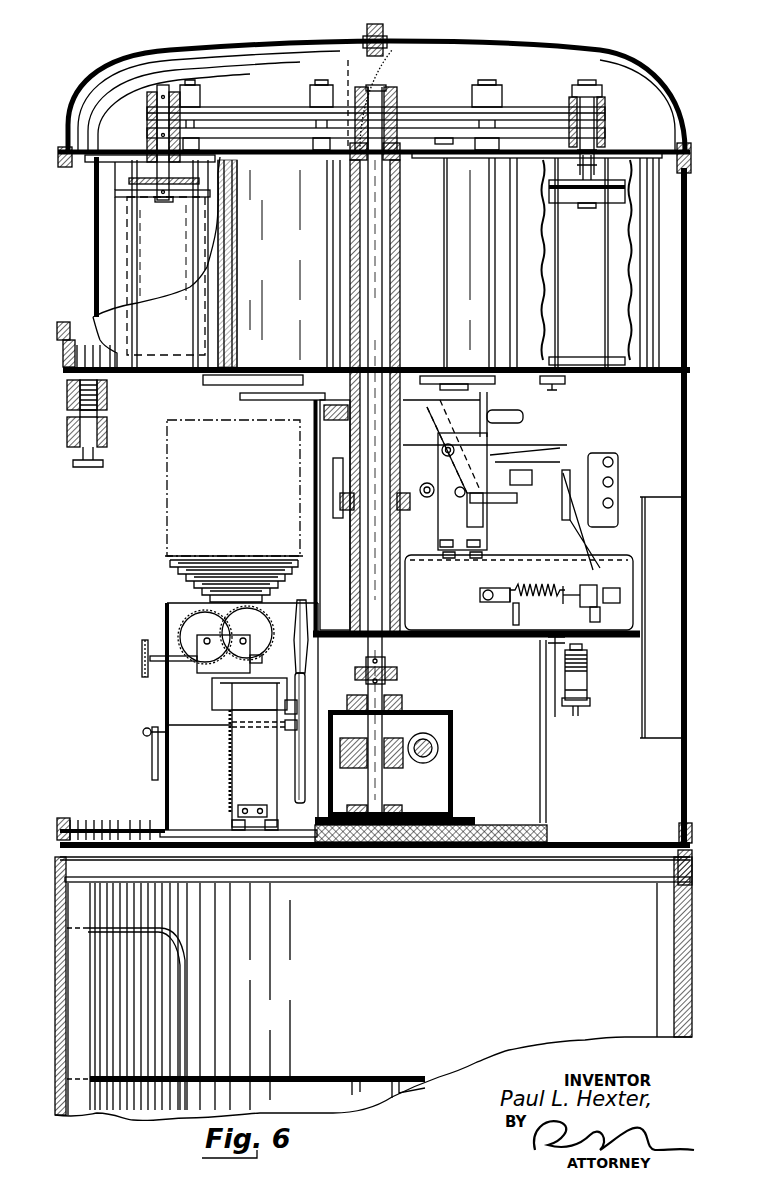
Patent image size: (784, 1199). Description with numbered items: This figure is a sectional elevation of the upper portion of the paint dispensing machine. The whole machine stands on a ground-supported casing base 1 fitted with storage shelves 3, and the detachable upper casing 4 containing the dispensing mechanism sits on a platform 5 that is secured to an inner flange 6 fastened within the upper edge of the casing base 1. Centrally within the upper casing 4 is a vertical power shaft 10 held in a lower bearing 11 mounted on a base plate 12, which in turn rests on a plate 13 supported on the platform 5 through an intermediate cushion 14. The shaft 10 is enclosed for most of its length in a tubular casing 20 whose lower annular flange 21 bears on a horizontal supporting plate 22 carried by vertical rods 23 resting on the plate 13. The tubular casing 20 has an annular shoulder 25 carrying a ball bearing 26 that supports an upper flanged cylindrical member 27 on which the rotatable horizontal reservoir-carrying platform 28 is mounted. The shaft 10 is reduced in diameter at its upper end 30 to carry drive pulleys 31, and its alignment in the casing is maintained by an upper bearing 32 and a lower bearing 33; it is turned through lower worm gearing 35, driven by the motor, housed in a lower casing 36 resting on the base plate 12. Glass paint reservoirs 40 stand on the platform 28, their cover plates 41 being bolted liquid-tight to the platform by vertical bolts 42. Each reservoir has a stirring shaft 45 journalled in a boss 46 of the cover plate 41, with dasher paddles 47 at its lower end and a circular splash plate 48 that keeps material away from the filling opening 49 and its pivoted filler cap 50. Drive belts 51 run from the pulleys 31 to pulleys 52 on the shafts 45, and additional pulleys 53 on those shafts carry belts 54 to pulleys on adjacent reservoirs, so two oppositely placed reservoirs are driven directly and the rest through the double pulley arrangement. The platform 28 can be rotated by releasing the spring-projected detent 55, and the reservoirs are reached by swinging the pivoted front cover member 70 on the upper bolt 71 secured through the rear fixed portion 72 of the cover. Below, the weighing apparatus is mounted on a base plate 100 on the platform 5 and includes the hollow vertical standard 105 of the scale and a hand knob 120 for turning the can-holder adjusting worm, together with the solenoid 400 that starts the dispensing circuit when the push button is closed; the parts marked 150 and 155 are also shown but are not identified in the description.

The casing base 1 is at (692, 947).
The storage shelves 3 is at (340, 1067).
The upper casing 4 is at (686, 440).
The platform 5 is at (622, 843).
The inner flange 6 is at (687, 860).
The vertical power shaft 10 is at (392, 277).
The lower bearing 11 is at (398, 813).
The base plate 12 is at (487, 806).
The plate 13 is at (557, 822).
The intermediate cushion 14 is at (556, 839).
The tubular casing 20 is at (400, 243).
The annular flange 21 is at (362, 588).
The horizontal supporting plate 22 is at (520, 638).
The vertical rods 23 is at (543, 780).
The annular shoulder 25 is at (402, 512).
The ball bearing 26 is at (401, 492).
The upper flanged cylindrical member 27 is at (432, 372).
The reservoir carrying platform 28 is at (682, 374).
The reduced upper end of shaft 30 is at (378, 86).
The drive pulleys 31 is at (394, 108).
The upper bearing 32 is at (392, 640).
The lower bearing 33 is at (393, 147).
The worm gearing 35 is at (398, 762).
The lower casing 36 is at (455, 739).
The paint reservoirs 40 is at (652, 287).
The cover plates 41 is at (693, 160).
The vertical bolts 42 is at (260, 252).
The stirring shafts 45 is at (163, 85).
The bosses 46 is at (162, 179).
The stirring paddles 47 is at (130, 283).
The splash plate 48 is at (123, 182).
The filling opening 49 is at (117, 163).
The filler cap 50 is at (110, 140).
The drive belts 51 is at (248, 108).
The pulleys 52 is at (596, 112).
The additional drive pulleys 53 is at (612, 142).
The drive belts 54 is at (448, 131).
The detent 55 is at (90, 468).
The front cover member 70 is at (290, 42).
The upper bolt 71 is at (384, 30).
The rear fixed portion of cover 72 is at (652, 78).
The base plate 100 is at (160, 830).
The vertical standard 105 is at (250, 780).
The hand knob 120 is at (142, 663).
The pin 150 is at (143, 732).
The rack 155 is at (218, 727).
The solenoid 400 is at (584, 692).